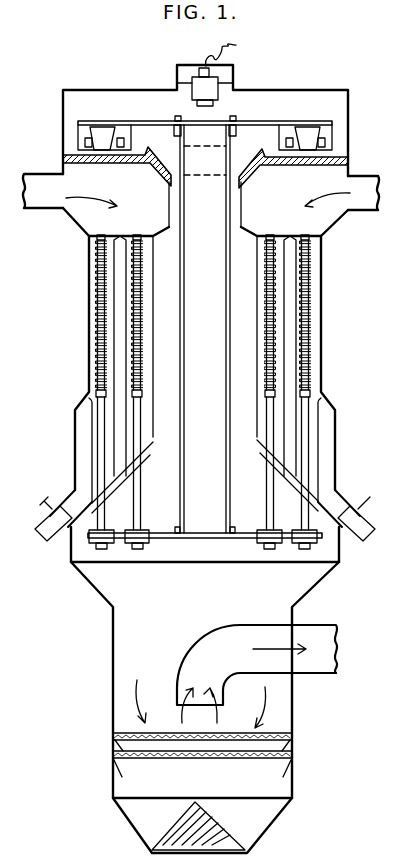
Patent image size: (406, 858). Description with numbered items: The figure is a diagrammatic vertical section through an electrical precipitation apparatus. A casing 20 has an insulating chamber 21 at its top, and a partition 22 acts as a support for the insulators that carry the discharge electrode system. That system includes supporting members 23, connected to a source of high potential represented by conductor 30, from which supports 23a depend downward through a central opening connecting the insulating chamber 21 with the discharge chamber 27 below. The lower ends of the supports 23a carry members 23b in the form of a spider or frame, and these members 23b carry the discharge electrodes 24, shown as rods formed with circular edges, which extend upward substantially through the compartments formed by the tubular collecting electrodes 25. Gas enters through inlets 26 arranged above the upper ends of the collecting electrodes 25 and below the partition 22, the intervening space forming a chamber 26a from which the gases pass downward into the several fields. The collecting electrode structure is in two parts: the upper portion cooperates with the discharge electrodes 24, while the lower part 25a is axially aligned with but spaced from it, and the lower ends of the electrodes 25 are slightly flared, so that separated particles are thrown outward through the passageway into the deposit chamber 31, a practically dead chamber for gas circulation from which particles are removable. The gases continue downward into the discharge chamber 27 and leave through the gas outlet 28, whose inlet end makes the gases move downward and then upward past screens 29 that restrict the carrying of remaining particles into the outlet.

The casing 20 is at (318, 328).
The insulating chamber 21 is at (264, 101).
The partition 22 is at (291, 166).
The supporting members 23 is at (292, 120).
The supports 23a is at (184, 339).
The members 23b is at (215, 563).
The discharge electrodes 24 is at (301, 294).
The collecting electrodes 25 is at (128, 312).
The lower part of collecting electrode structure 25a is at (388, 475).
The inlets 26 is at (33, 183).
The chamber 26a is at (286, 209).
The discharge chamber 27 is at (205, 707).
The gas outlet 28 is at (325, 655).
The screens 29 is at (273, 757).
The conductor 30 is at (236, 47).
The deposit chamber 31 is at (80, 425).